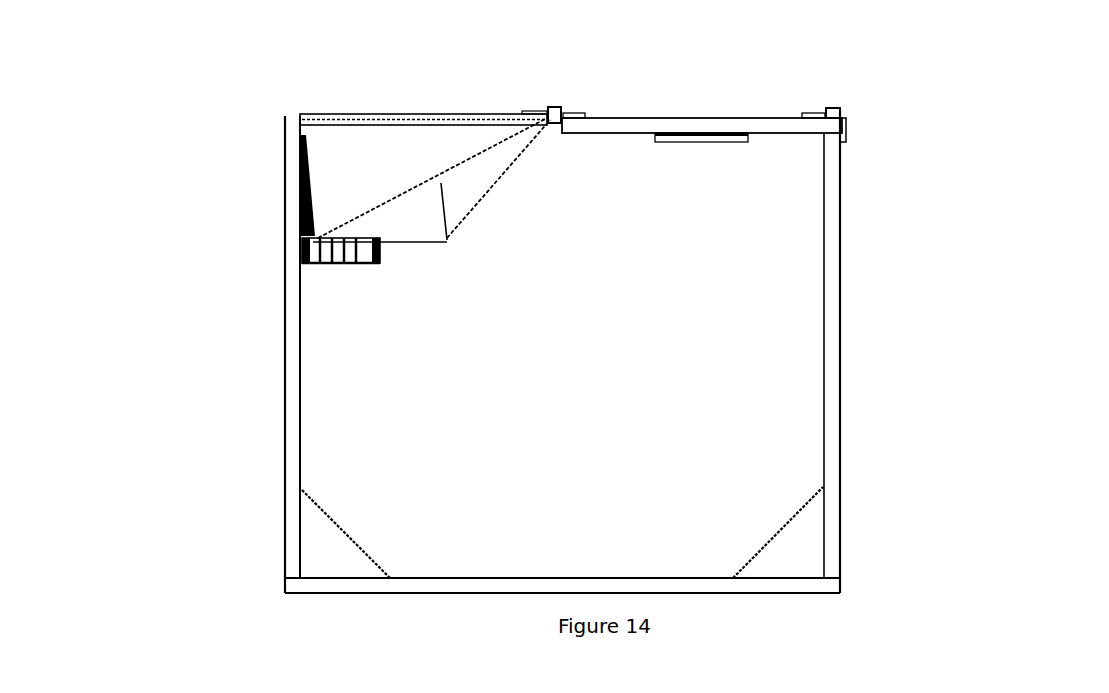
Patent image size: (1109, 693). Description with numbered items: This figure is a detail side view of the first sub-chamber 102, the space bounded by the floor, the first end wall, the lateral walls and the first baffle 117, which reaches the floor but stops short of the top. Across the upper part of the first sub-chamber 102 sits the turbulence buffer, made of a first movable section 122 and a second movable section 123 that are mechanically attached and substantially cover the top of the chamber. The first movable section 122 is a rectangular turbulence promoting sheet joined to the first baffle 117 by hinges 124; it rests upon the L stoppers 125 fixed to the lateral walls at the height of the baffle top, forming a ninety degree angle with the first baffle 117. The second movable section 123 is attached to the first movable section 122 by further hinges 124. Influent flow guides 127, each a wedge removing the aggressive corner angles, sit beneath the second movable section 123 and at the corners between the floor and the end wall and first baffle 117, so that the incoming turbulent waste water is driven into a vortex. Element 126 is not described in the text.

The first sub-chamber 102 is at (222, 138).
The first baffle 117 is at (837, 327).
The first movable section 122 is at (727, 118).
The second movable section 123 is at (400, 145).
The hinges 124 is at (560, 107).
The L stopper 125 is at (730, 140).
The support block 126 is at (403, 227).
The influent flow guides 127 is at (330, 558).